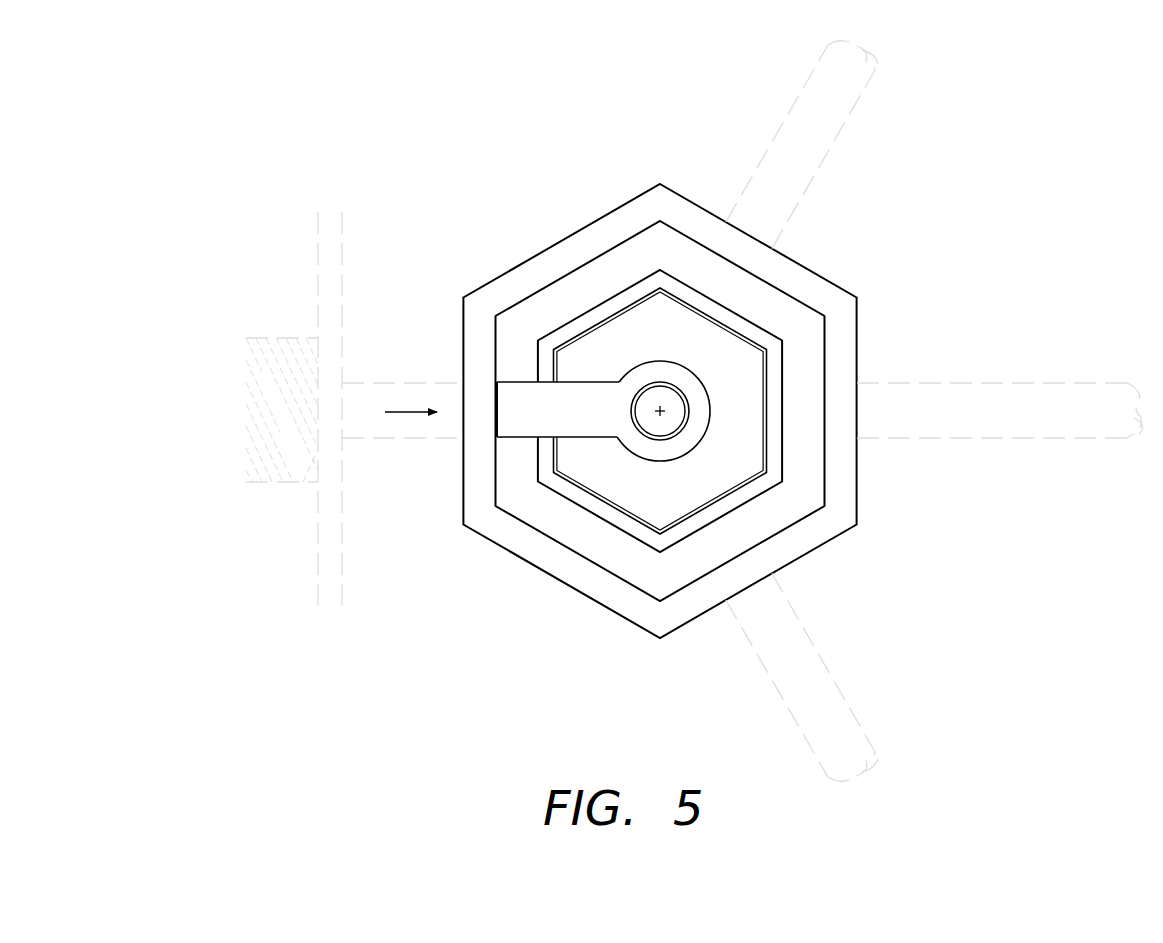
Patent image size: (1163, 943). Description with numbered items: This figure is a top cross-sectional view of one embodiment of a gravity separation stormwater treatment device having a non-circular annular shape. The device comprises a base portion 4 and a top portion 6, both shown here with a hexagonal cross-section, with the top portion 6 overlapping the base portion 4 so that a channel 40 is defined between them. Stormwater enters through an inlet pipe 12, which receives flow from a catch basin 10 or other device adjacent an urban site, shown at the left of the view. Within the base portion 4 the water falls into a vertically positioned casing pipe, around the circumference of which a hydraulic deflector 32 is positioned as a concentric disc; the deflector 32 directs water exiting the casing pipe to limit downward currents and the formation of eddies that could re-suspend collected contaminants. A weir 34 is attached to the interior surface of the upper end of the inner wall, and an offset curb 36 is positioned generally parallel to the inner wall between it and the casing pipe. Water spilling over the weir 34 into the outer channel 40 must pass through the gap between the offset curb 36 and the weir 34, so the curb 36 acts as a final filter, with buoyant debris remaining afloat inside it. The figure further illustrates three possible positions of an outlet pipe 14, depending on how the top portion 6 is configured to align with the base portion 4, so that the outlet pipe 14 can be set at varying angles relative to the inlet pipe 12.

The base portion 4 is at (636, 386).
The top portion 6 is at (836, 525).
The catch basin 10 is at (282, 392).
The inlet pipe 12 is at (377, 395).
The outlet pipe 14 is at (848, 102).
The hydraulic deflector 32 is at (678, 457).
The weir 34 is at (592, 325).
The offset curb 36 is at (628, 303).
The channel 40 is at (632, 554).